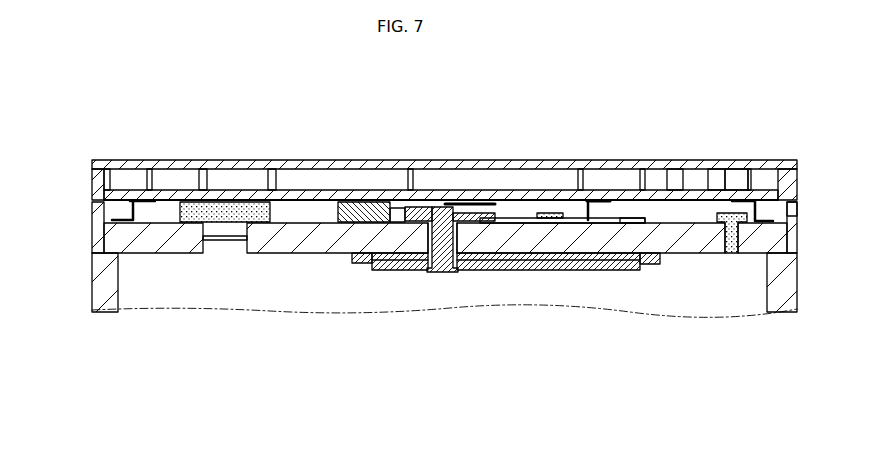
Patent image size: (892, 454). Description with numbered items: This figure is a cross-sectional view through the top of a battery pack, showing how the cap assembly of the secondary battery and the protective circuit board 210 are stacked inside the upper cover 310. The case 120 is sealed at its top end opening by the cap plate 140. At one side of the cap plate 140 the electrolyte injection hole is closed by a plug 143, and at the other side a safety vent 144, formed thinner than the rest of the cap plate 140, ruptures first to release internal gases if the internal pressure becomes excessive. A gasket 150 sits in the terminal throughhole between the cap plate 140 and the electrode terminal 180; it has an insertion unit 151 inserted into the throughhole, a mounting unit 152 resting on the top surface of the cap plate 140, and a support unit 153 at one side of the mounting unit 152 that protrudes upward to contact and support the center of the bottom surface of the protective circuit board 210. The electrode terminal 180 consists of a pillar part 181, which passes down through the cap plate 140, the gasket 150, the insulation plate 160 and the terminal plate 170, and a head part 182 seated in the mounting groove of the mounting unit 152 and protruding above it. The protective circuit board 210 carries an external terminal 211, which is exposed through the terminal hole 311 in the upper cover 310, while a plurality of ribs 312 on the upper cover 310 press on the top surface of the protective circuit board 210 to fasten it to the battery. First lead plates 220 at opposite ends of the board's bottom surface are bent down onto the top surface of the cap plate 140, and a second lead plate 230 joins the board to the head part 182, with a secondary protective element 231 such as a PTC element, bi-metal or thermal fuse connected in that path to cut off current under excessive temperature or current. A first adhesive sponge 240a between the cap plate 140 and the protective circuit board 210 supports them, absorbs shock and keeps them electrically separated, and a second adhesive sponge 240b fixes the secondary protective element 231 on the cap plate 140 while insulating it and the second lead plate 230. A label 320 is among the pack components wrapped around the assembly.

The case 120 is at (106, 312).
The cap plate 140 is at (178, 247).
The plug 143 is at (742, 235).
The safety vent 144 is at (228, 241).
The gasket 150 is at (418, 142).
The insertion unit 151 is at (452, 163).
The mounting unit 152 is at (397, 208).
The support unit 153 is at (363, 205).
The insulation plate 160 is at (600, 224).
The terminal plate 170 is at (510, 262).
The electrode terminal 180 is at (441, 311).
The pillar part 181 is at (442, 273).
The head part 182 is at (408, 228).
The protective circuit board 210 is at (797, 193).
The external terminal 211 is at (737, 178).
The first lead plate 220 is at (800, 208).
The second lead plate 230 is at (605, 200).
The secondary protective element 231 is at (588, 222).
The first adhesive sponge 240a is at (258, 214).
The second adhesive sponge 240b is at (638, 226).
The upper cover 310 is at (92, 186).
The terminal hole 311 is at (655, 169).
The ribs 312 is at (150, 184).
The label 320 is at (92, 255).